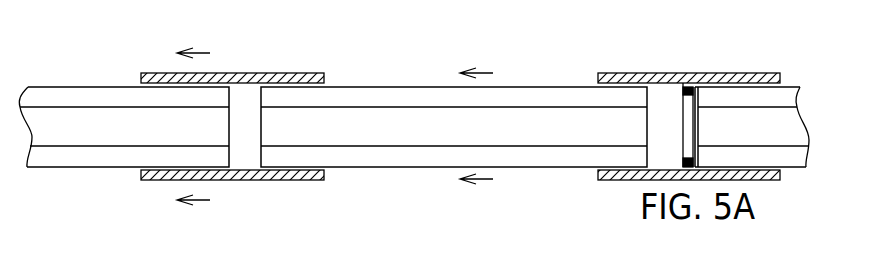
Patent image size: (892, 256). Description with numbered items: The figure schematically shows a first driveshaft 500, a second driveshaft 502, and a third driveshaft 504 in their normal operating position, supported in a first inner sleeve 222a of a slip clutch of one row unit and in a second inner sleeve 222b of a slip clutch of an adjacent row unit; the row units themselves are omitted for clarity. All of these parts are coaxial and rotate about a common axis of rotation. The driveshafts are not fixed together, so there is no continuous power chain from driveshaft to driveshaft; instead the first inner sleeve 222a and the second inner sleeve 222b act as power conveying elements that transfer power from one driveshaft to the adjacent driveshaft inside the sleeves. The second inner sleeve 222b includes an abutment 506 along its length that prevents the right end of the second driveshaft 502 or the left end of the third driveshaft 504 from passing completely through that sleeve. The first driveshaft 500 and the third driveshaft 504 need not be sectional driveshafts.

The first driveshaft 500 is at (87, 100).
The second driveshaft 502 is at (512, 100).
The third driveshaft 504 is at (797, 83).
The abutment 506 is at (683, 92).
The first inner sleeve 222a is at (245, 180).
The second inner sleeve 222b is at (684, 73).